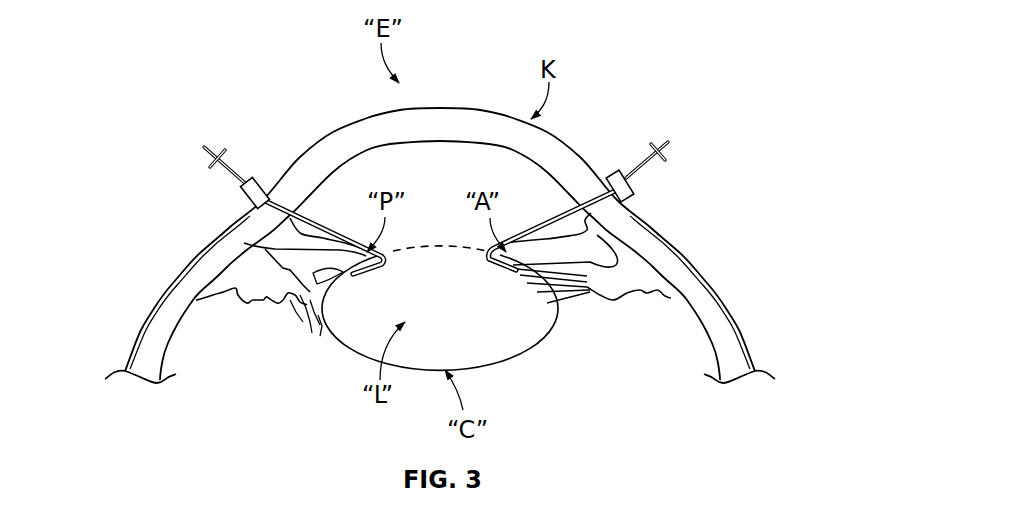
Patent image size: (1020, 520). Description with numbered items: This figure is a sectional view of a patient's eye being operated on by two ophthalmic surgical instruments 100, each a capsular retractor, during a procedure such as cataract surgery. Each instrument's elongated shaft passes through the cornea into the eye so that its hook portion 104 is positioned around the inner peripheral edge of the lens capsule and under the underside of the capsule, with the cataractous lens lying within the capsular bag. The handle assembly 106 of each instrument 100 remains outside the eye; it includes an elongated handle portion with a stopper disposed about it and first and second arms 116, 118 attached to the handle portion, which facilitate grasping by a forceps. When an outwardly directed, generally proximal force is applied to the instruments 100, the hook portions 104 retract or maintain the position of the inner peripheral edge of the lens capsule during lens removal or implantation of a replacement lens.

The ophthalmic surgical instrument 100 is at (438, 235).
The hook portion 104 is at (372, 262).
The handle assembly 106 is at (234, 182).
The first arm 116 is at (212, 148).
The second arm 118 is at (226, 176).